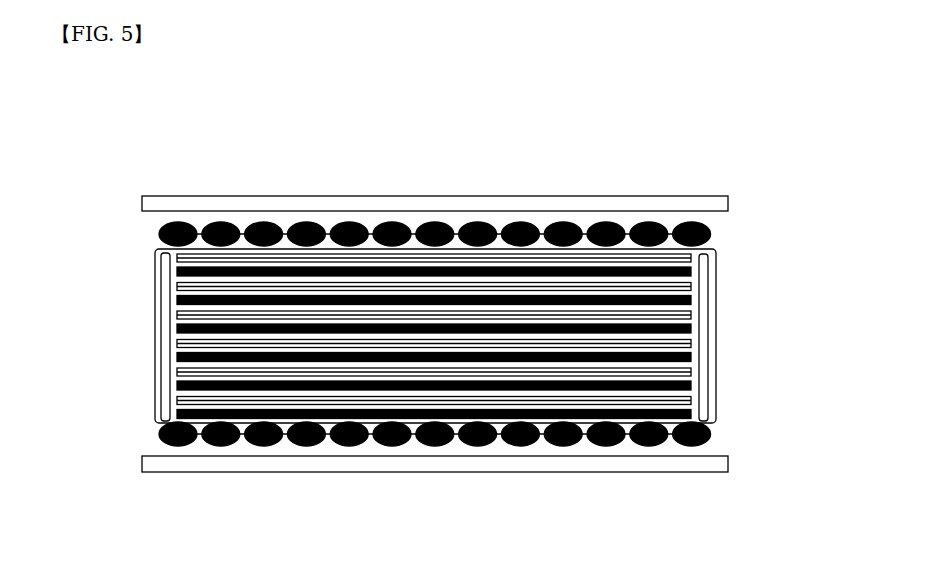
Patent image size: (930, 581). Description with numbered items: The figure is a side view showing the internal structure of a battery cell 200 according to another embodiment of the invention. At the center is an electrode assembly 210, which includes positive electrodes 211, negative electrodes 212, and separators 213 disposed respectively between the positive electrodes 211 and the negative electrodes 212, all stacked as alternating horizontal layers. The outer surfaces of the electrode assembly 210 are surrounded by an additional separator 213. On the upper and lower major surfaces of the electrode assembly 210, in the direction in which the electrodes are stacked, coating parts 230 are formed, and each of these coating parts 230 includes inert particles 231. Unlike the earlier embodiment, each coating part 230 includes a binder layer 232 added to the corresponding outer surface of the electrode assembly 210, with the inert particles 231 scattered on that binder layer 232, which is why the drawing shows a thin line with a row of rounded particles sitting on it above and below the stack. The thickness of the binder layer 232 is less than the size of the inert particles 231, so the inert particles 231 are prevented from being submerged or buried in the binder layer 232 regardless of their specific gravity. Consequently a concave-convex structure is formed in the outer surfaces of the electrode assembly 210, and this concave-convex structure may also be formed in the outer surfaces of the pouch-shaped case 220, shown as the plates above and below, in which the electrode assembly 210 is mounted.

The battery cell 200 is at (73, 102).
The electrode assembly 210 is at (459, 332).
The positive electrodes 211 is at (173, 251).
The negative electrodes 212 is at (172, 291).
The separators 213 is at (173, 331).
The pouch-shaped case 220 is at (708, 195).
The coating parts 230 is at (405, 332).
The inert particles 231 is at (177, 219).
The binder layer 232 is at (233, 229).